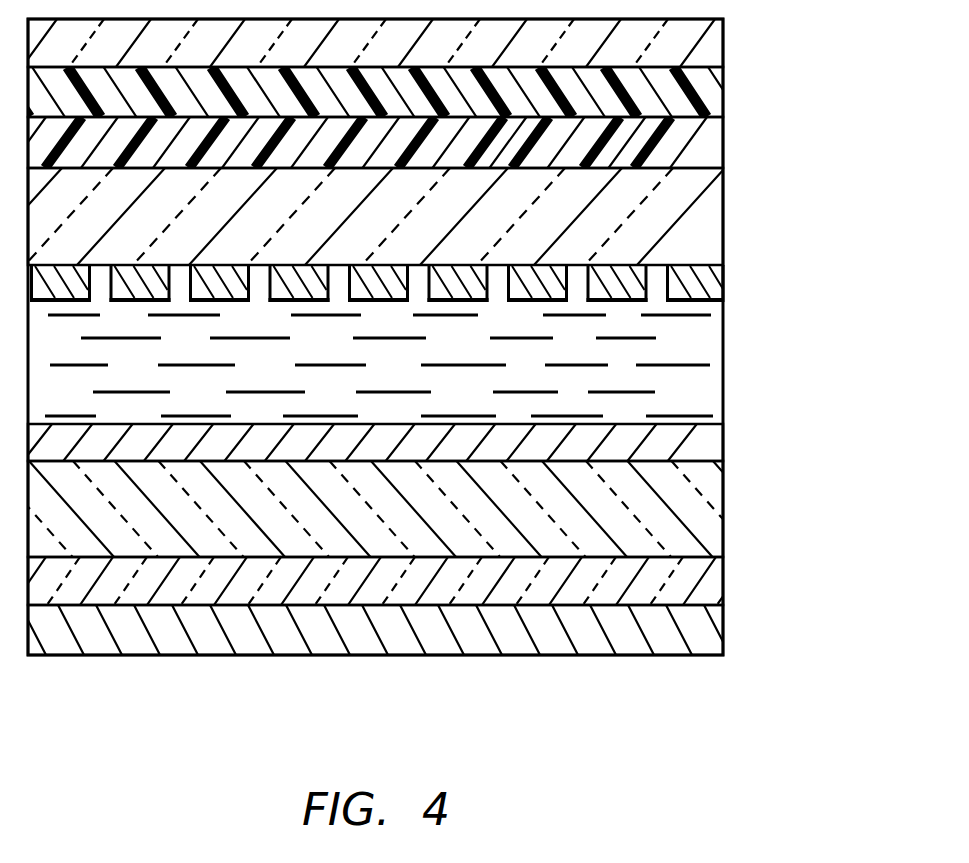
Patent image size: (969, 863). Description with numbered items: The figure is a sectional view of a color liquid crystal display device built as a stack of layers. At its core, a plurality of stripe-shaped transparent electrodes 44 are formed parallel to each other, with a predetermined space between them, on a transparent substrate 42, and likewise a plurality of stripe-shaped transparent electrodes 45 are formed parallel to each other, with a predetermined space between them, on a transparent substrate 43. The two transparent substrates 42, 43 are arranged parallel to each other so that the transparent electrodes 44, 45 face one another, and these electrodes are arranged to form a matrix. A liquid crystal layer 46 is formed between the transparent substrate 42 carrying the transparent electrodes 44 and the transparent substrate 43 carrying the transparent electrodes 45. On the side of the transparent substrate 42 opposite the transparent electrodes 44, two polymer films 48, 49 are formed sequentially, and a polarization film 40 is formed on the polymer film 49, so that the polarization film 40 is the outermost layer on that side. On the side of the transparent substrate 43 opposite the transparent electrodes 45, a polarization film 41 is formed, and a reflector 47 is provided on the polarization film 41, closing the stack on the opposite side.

The polarization film 40 is at (710, 62).
The polymer film 49 is at (707, 100).
The polymer film 48 is at (698, 148).
The transparent substrate 42 is at (703, 225).
The transparent electrodes 44 is at (713, 288).
The liquid crystal layer 46 is at (703, 353).
The transparent electrodes 45 is at (705, 448).
The transparent substrate 43 is at (703, 518).
The polarization film 41 is at (702, 589).
The reflector 47 is at (707, 634).